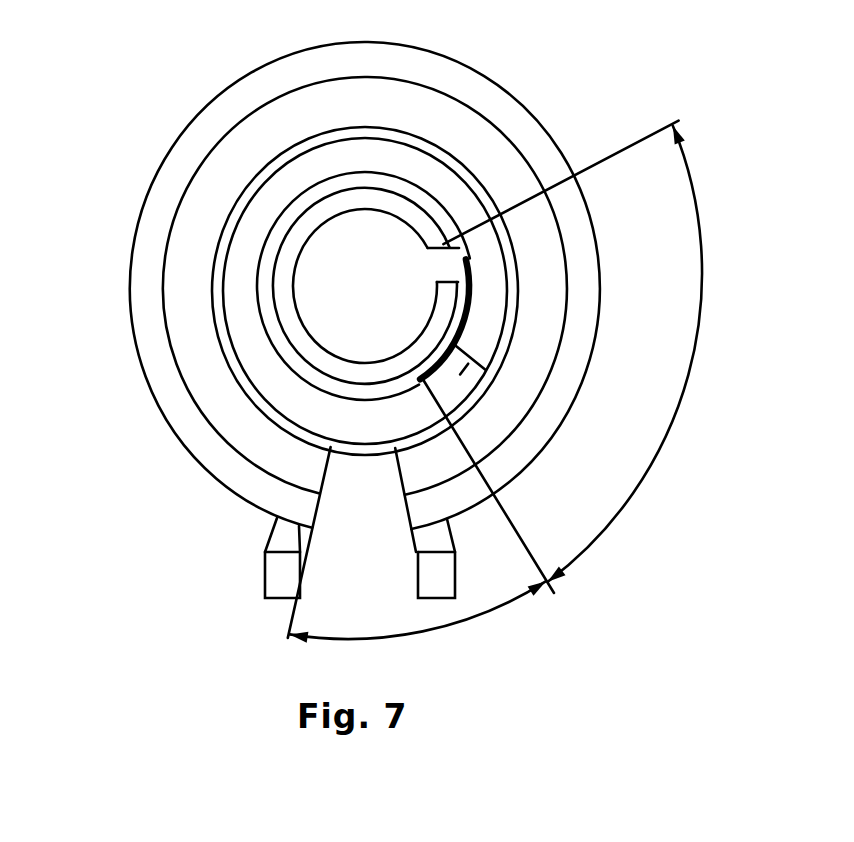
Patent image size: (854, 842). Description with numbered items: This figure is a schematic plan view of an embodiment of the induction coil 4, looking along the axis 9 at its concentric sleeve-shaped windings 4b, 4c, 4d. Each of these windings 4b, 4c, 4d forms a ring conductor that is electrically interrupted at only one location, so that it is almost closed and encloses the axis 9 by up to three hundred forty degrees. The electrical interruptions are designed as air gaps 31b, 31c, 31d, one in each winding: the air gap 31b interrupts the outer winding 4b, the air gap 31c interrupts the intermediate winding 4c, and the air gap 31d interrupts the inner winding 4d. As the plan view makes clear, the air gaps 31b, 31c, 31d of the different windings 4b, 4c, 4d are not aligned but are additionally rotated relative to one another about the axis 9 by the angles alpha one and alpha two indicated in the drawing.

The holder / bearing housing 4 is at (567, 627).
The winding 4b is at (187, 422).
The winding 4c is at (236, 349).
The winding 4d is at (261, 277).
The axis 9 is at (366, 285).
The air gap 31b is at (346, 519).
The air gap 31c is at (452, 388).
The air gap 31d is at (455, 253).